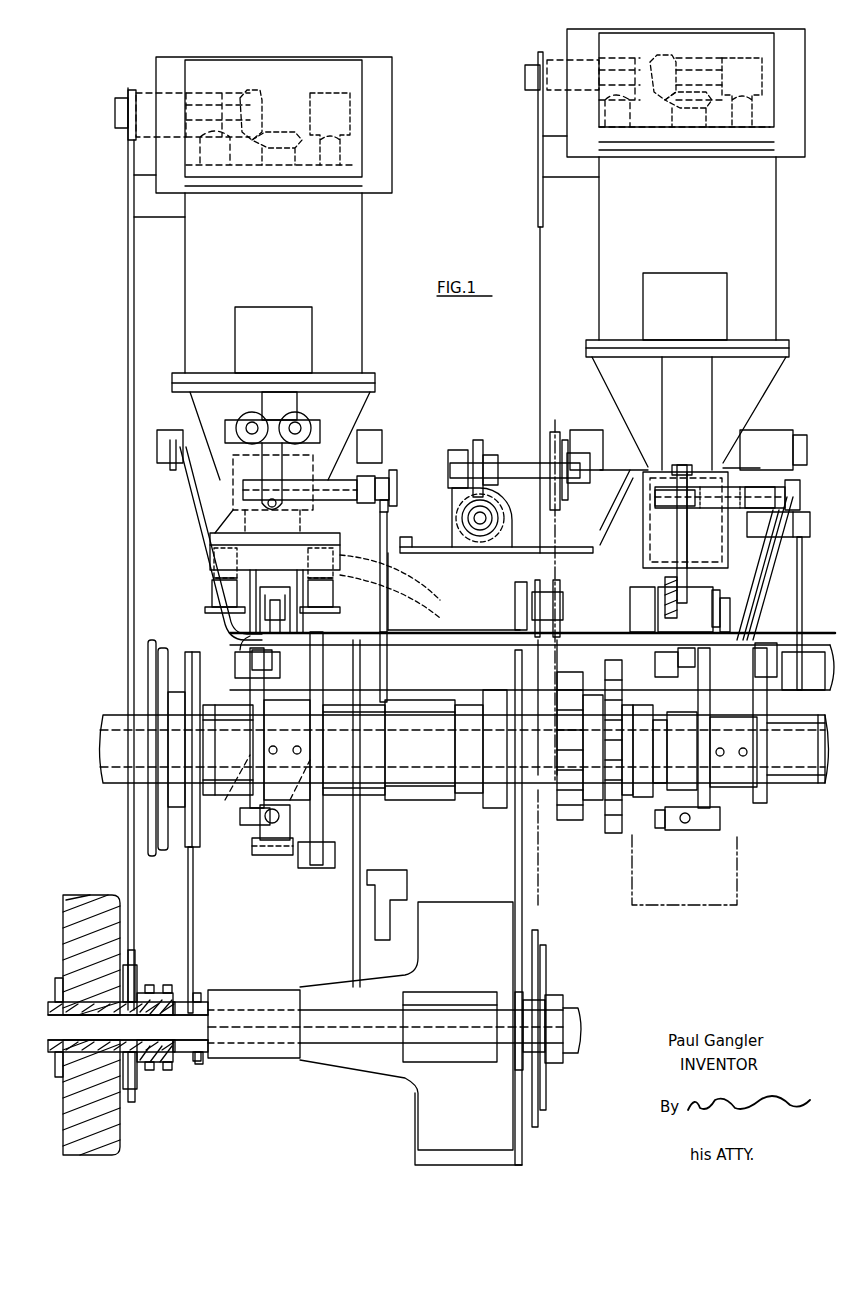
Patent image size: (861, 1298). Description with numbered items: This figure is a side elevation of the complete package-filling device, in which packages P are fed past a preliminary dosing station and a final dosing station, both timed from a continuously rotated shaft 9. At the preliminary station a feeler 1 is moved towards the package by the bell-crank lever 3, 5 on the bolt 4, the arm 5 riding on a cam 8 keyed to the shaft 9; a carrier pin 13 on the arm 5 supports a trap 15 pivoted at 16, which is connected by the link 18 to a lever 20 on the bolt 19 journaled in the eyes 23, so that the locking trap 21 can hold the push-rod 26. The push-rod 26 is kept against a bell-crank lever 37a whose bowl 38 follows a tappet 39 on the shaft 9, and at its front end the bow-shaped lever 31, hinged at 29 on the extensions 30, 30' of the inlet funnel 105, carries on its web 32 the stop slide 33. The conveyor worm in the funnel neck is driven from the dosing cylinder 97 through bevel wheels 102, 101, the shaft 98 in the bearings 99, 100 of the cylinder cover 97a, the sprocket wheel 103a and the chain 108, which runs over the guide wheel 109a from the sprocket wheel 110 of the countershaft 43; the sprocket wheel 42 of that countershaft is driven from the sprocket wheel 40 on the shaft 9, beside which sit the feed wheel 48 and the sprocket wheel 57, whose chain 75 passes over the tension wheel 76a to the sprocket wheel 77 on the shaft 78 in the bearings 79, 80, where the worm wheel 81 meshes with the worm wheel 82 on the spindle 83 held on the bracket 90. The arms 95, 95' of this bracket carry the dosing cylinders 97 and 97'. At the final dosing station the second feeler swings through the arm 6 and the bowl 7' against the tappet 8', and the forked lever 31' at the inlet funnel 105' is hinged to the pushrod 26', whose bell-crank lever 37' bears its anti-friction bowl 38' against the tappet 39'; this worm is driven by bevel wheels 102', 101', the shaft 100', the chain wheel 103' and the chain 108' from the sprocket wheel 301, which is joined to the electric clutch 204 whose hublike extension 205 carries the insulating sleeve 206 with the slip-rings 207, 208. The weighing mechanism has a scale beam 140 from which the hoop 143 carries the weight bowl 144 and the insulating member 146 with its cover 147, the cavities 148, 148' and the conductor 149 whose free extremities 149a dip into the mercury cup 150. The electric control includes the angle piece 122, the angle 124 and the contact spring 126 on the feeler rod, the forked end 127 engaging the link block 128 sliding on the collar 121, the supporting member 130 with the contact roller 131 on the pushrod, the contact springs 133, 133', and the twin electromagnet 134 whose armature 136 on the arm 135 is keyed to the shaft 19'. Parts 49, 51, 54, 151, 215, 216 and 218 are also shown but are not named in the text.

The feeler 1 is at (686, 826).
The bell-crank lever 3 is at (660, 830).
The bolt 4 is at (830, 660).
The arm 5 is at (473, 659).
The arm 6 is at (762, 596).
The bowl 7' is at (245, 747).
The cam 8 is at (712, 728).
The tappet 8' is at (228, 750).
The shaft 9 is at (100, 748).
The carrier pin 13 is at (660, 670).
The trap 15 is at (665, 582).
The pivot 16 is at (716, 596).
The link 18 is at (680, 548).
The bolt 19 is at (720, 507).
The shaft 19' is at (275, 494).
The lever 20 is at (682, 472).
The locking trap 21 is at (790, 490).
The eyes 23 is at (666, 508).
The push-rod 26 is at (786, 513).
The pushrod 26' is at (401, 566).
The hinge 29 is at (701, 520).
The extension 30 is at (773, 436).
The extension 30' is at (591, 438).
The bow-shaped lever 31 is at (689, 555).
The forked lever 31' is at (261, 556).
The web 32 is at (718, 630).
The stop slide 33 is at (655, 625).
The bell-crank lever 37a is at (798, 565).
The bell-crank lever 37' is at (390, 586).
The bowl 38 is at (772, 643).
The anti-friction bowl 38' is at (367, 667).
The tappet 39 is at (776, 725).
The tappet 39' is at (354, 750).
The sprocket wheel 40 is at (515, 836).
The sprocket wheel 42 is at (515, 1066).
The countershaft 43 is at (583, 1028).
The feed wheel 48 is at (580, 820).
The gear 49 is at (648, 800).
The gear 51 is at (620, 836).
The block 54 is at (575, 632).
The sprocket wheel 57 is at (545, 826).
The chain 75 is at (562, 632).
The tension wheel 76a is at (558, 590).
The sprocket wheel 77 is at (554, 600).
The shaft 78 is at (512, 464).
The bearing 79 is at (456, 450).
The bearing 80 is at (555, 450).
The worm wheel 81 is at (482, 444).
The worm wheel 82 is at (506, 512).
The spindle 83 is at (480, 524).
The bracket 90 is at (454, 583).
The arm 95 is at (687, 600).
The arm 95' is at (252, 482).
The dosing cylinder 97 is at (689, 184).
The dosing cylinder 97' is at (279, 215).
The cylinder cover 97a is at (708, 150).
The shaft 98 is at (710, 78).
The bearing 99 is at (765, 34).
The bearing 100 is at (684, 84).
The shaft 100' is at (270, 114).
The bevel wheel 101 is at (666, 59).
The bevel wheel 101' is at (272, 102).
The bevel wheel 102 is at (671, 109).
The bevel wheel 102' is at (301, 129).
The sprocket wheel 103a is at (538, 64).
The chain wheel 103' is at (144, 98).
The inlet funnel 105 is at (692, 405).
The inlet funnel 105' is at (291, 426).
The chain 108 is at (560, 302).
The chain 108' is at (149, 549).
The guide wheel 109a is at (536, 582).
The sprocket wheel 110 is at (545, 958).
The collar 121 is at (392, 750).
The angle piece 122 is at (272, 845).
The angle 124 is at (345, 862).
The contact spring 126 is at (322, 820).
The forked end 127 is at (305, 758).
The link block 128 is at (262, 810).
The supporting member 130 is at (388, 498).
The contact roller 131 is at (386, 476).
The contact spring 133 is at (357, 481).
The contact spring 133' is at (411, 486).
The twin electromagnet 134 is at (240, 416).
The arm 135 is at (280, 465).
The armature 136 is at (270, 414).
The scale beam 140 is at (240, 642).
The hoop 143 is at (245, 626).
The weight bowl 144 is at (318, 995).
The insulating member 146 is at (212, 545).
The cover 147 is at (225, 532).
The cavity 148 is at (254, 521).
The cavity 148' is at (301, 521).
The conductor 149 is at (214, 560).
The free extremities 149a is at (214, 578).
The mercury cup 150 is at (212, 595).
The block 151 is at (262, 605).
The electric clutch 204 is at (95, 897).
The hublike extension 205 is at (168, 1040).
The sleeve 206 is at (180, 1055).
The slip-ring 207 is at (170, 978).
The slip-ring 208 is at (180, 988).
The pin 215 is at (205, 1065).
The disc 216 is at (185, 660).
The disc 218 is at (148, 646).
The sprocket wheel 301 is at (133, 948).
The package P is at (737, 852).